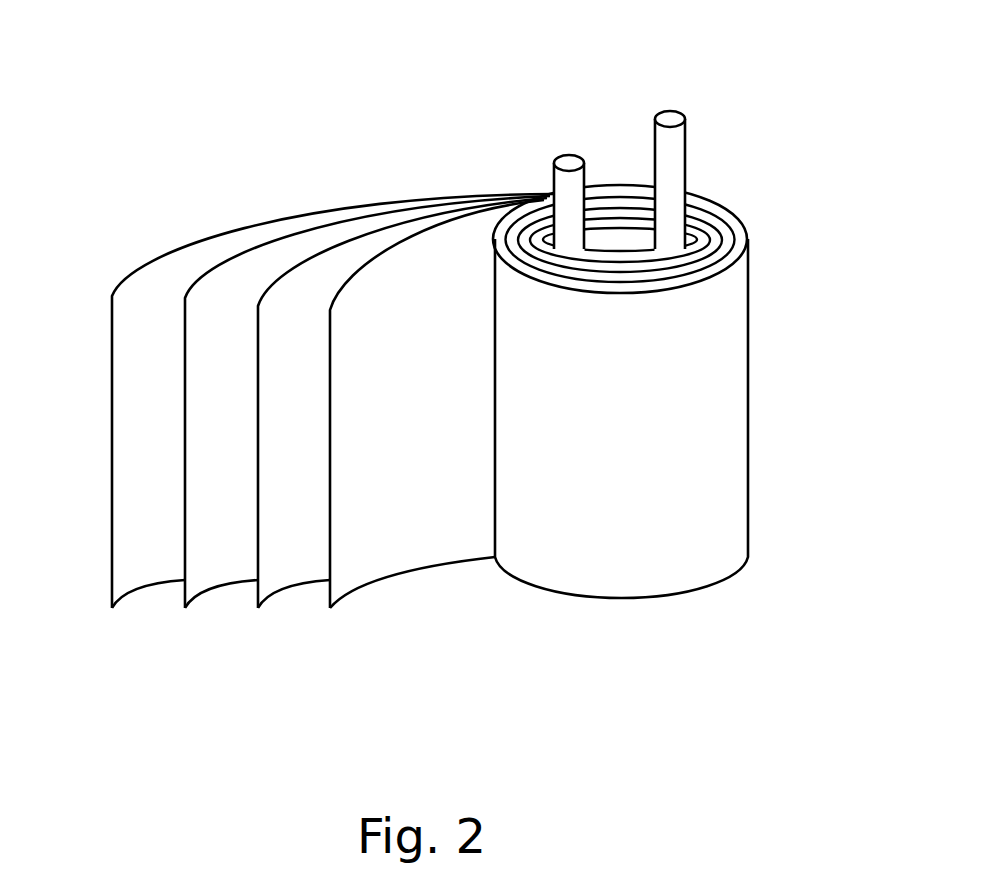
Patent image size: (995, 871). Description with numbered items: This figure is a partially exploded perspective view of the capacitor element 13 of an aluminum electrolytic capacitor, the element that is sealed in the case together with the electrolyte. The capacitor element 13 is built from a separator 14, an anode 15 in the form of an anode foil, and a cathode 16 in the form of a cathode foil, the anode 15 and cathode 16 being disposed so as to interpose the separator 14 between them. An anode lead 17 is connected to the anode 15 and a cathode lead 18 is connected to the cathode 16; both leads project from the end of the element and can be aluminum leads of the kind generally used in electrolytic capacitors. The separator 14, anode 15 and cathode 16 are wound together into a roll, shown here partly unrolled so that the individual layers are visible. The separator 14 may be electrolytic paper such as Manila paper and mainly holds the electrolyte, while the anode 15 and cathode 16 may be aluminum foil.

The capacitor element 13 is at (202, 161).
The separator 14 is at (140, 595).
The anode 15 is at (218, 595).
The cathode 16 is at (402, 560).
The anode lead 17 is at (670, 117).
The cathode lead 18 is at (568, 158).